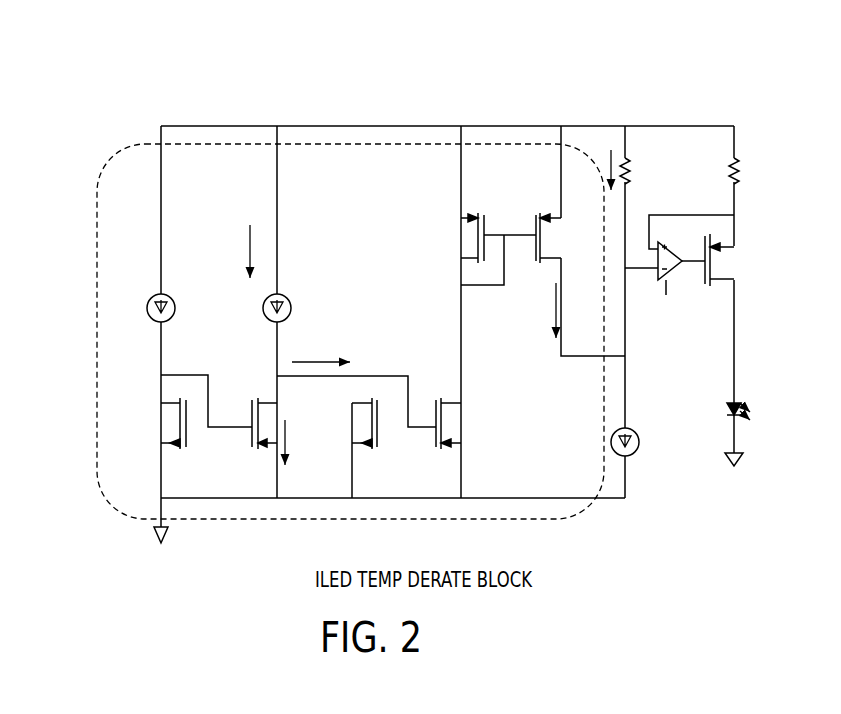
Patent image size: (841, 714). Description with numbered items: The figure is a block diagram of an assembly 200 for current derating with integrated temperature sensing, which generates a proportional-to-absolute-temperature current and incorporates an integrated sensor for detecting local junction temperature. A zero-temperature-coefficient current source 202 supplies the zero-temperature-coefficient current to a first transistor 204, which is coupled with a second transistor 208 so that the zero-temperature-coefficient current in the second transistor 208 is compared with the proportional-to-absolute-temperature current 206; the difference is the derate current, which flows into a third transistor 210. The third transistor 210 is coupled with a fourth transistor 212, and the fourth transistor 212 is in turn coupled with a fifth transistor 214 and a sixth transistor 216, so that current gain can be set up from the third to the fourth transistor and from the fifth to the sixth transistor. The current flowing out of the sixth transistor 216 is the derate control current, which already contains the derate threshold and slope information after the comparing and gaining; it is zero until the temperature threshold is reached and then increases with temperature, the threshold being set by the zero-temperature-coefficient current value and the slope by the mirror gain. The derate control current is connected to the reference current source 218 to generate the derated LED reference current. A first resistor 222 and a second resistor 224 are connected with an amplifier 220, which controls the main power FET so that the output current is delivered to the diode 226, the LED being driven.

The assembly 200 is at (112, 112).
The zero temperature coefficient current source I_ZTC 202 is at (154, 295).
The transistor M1 204 is at (142, 428).
The I_PTAT current 206 is at (285, 296).
The transistor M2 208 is at (291, 410).
The transistor M3 210 is at (347, 448).
The transistor M4 212 is at (479, 432).
The transistor M5 214 is at (431, 237).
The transistor M6 216 is at (526, 216).
The I_REF current source 218 is at (636, 432).
The amplifier 220 is at (664, 292).
The resistor 222 is at (617, 157).
The resistor 224 is at (743, 168).
The diode 226 is at (747, 387).